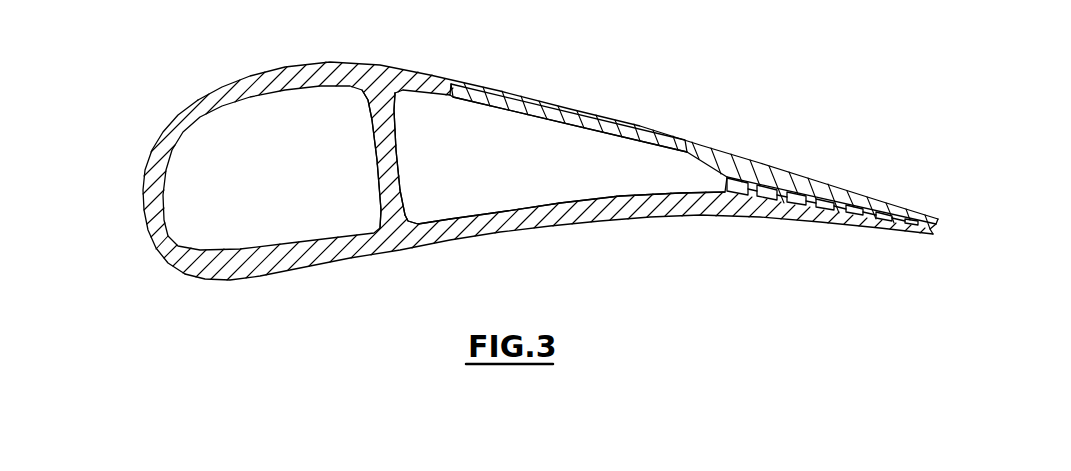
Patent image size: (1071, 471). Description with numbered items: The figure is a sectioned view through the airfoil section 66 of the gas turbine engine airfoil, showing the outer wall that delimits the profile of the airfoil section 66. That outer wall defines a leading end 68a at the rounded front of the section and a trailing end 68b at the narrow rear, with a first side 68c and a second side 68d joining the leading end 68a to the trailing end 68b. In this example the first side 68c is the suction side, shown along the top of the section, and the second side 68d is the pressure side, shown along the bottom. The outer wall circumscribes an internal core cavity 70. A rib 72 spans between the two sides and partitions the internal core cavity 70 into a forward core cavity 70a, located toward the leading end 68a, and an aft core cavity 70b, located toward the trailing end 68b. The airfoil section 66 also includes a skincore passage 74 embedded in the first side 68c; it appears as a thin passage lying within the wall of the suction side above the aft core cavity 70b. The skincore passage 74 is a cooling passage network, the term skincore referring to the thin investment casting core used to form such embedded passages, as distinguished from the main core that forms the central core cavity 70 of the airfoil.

The airfoil section 66 is at (225, 296).
The leading end 68a is at (144, 220).
The trailing end 68b is at (933, 241).
The first side 68c is at (363, 63).
The second side 68d is at (356, 258).
The internal core cavity 70 is at (614, 169).
The forward core cavity 70a is at (280, 189).
The aft core cavity 70b is at (515, 177).
The rib 72 is at (377, 166).
The skincore passage 74 is at (564, 120).